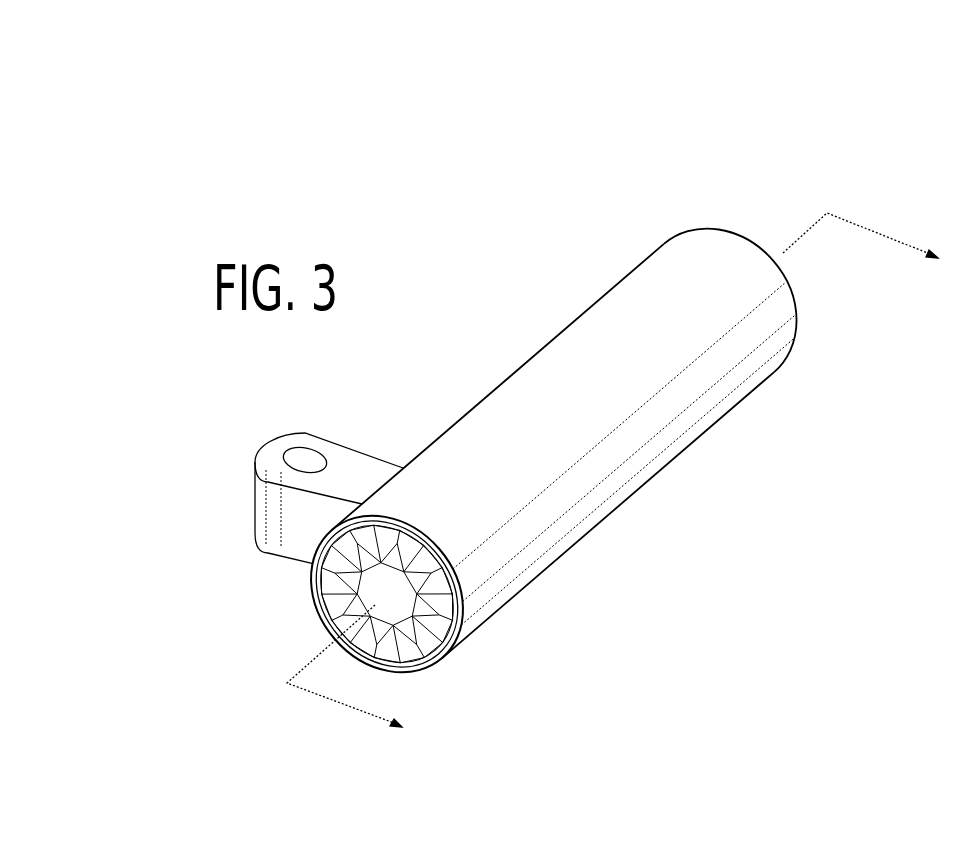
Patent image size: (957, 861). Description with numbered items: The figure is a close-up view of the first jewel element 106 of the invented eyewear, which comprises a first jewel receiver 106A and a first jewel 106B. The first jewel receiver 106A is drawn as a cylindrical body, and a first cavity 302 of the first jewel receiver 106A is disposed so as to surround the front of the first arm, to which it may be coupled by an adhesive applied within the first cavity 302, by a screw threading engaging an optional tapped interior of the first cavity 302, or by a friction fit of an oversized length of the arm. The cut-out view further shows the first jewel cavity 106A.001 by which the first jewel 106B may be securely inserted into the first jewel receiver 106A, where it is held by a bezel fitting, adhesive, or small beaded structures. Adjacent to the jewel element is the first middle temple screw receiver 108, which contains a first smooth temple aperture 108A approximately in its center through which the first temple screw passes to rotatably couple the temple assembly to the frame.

The first jewel element 106 is at (310, 94).
The first jewel receiver 106A is at (512, 370).
The first jewel cavity 106A.001 is at (427, 667).
The first jewel 106B is at (412, 625).
The first middle temple screw receiver 108 is at (255, 532).
The first smooth temple aperture 108A is at (303, 465).
The first cavity 302 is at (757, 243).